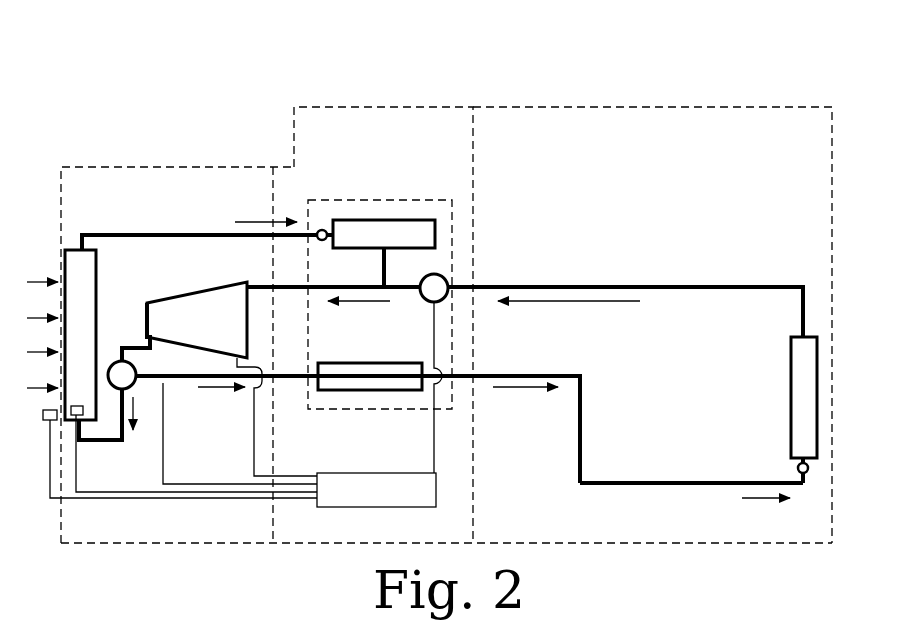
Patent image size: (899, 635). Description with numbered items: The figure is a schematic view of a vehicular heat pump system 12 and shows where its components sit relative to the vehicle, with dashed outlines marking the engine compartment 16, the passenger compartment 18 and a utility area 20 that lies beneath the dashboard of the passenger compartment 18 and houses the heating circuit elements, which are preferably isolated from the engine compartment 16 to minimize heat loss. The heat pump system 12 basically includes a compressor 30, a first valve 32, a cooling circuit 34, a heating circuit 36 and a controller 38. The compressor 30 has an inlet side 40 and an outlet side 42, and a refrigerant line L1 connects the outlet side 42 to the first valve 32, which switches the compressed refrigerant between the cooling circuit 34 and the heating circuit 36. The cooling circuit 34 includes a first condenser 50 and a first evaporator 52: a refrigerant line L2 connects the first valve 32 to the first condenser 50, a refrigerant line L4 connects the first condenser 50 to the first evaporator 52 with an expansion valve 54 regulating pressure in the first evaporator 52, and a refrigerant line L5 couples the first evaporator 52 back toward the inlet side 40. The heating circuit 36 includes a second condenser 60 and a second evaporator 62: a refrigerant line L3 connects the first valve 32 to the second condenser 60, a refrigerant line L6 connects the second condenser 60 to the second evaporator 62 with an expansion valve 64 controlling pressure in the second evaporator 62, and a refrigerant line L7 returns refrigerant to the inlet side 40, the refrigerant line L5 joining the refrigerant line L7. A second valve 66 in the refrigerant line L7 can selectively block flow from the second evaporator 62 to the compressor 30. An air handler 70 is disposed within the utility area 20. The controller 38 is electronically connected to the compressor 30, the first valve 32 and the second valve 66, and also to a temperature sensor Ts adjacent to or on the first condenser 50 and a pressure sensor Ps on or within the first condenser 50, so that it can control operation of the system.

The heat pump system 12 is at (255, 92).
The engine compartment 16 is at (183, 175).
The passenger compartment 18 is at (693, 108).
The utility area 20 is at (373, 137).
The compressor 30 is at (195, 302).
The first valve 32 is at (122, 373).
The cooling circuit 34 is at (147, 233).
The heating circuit 36 is at (695, 285).
The controller 38 is at (382, 498).
The inlet side 40 is at (248, 253).
The outlet side 42 is at (145, 337).
The first condenser 50 is at (72, 260).
The first evaporator 52 is at (424, 235).
The expansion valve 54 is at (322, 231).
The second condenser 60 is at (372, 368).
The second evaporator 62 is at (791, 393).
The expansion valve 64 is at (797, 468).
The second valve 66 is at (434, 288).
The air handler 70 is at (357, 200).
The refrigerant line L1 is at (128, 347).
The refrigerant line L2 is at (78, 428).
The refrigerant line L3 is at (190, 378).
The refrigerant line L4 is at (227, 235).
The refrigerant line L5 is at (385, 267).
The refrigerant line L6 is at (640, 483).
The refrigerant line L7 is at (733, 288).
The temperature sensor Ts is at (43, 415).
The pressure sensor Ps is at (84, 414).